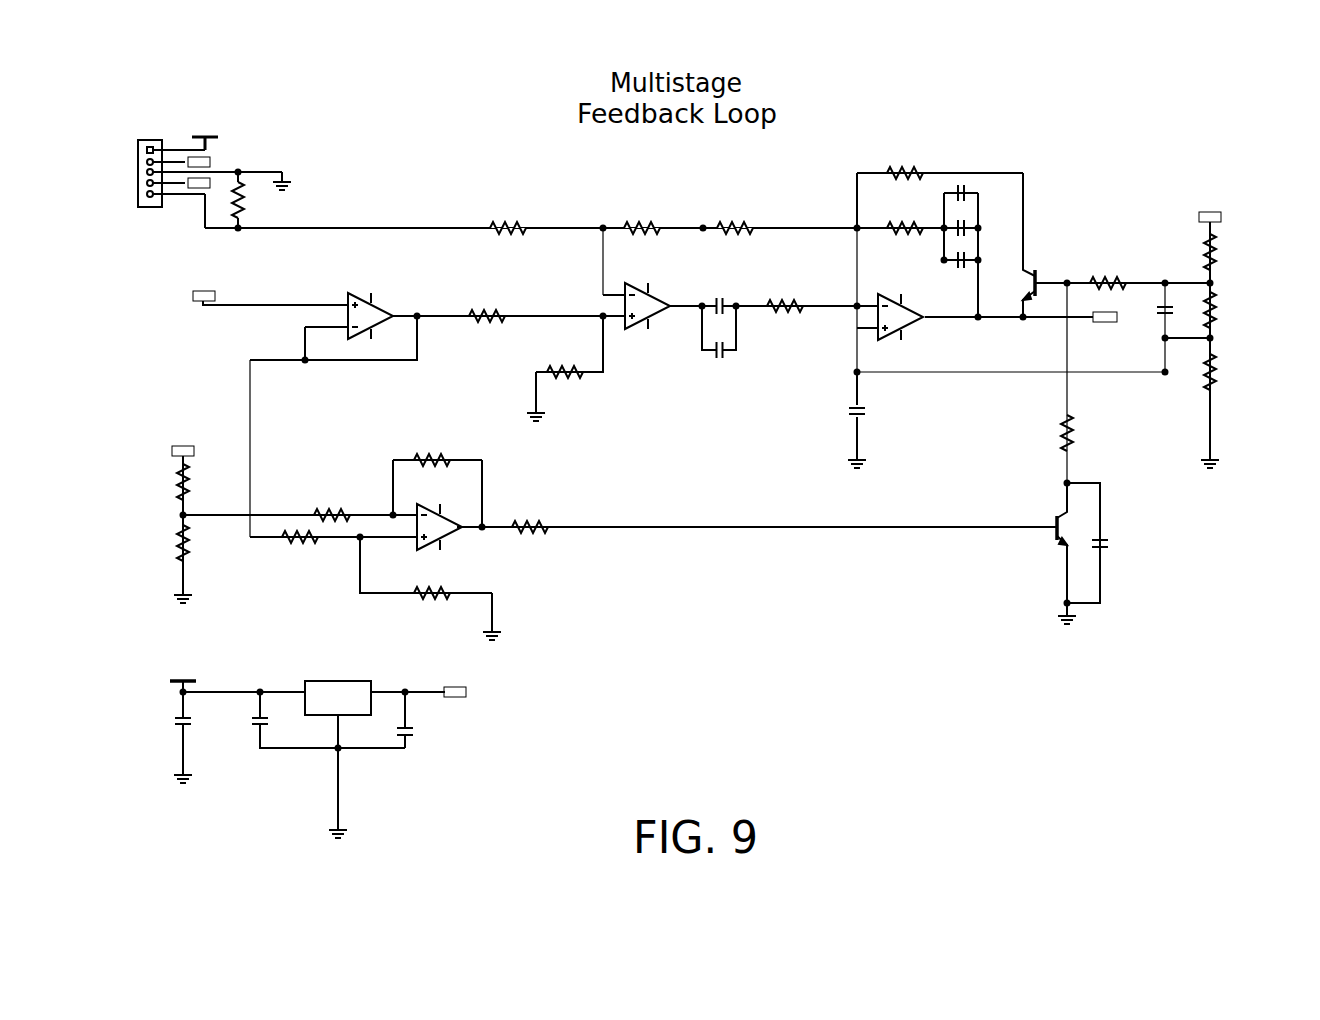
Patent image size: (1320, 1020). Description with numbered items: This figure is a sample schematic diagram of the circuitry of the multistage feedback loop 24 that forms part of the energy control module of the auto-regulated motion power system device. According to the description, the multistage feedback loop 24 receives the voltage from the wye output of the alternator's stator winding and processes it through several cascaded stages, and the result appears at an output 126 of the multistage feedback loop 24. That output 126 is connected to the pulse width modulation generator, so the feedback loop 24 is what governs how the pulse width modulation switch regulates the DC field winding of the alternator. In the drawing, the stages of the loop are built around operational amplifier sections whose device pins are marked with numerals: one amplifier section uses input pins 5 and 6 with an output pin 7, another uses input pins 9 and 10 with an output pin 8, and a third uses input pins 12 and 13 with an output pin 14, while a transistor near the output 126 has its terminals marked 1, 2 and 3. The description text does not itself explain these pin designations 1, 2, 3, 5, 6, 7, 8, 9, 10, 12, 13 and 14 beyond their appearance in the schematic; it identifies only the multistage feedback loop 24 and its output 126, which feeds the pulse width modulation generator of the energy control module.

The multistage feedback loop 24 is at (507, 165).
The output 126 is at (1118, 313).
The transistor Q1 emitter pin 1 is at (1027, 304).
The transistor Q1 base pin 2 is at (1051, 288).
The transistor Q1 collector pin 3 is at (1020, 224).
The op amp U1:B non-inverting input pin 5 is at (614, 317).
The op amp U1:B inverting input pin 6 is at (614, 296).
The op amp U1:B output pin 7 is at (685, 300).
The op amp U1:C output pin 8 is at (951, 310).
The op amp U1:C inverting input pin 9 is at (867, 307).
The op amp U1:C non-inverting input pin 10 is at (867, 329).
The op amp U1:D non-inverting input pin 12 is at (406, 537).
The op amp U1:D inverting input pin 13 is at (405, 515).
The op amp U1:D output pin 14 is at (757, 521).